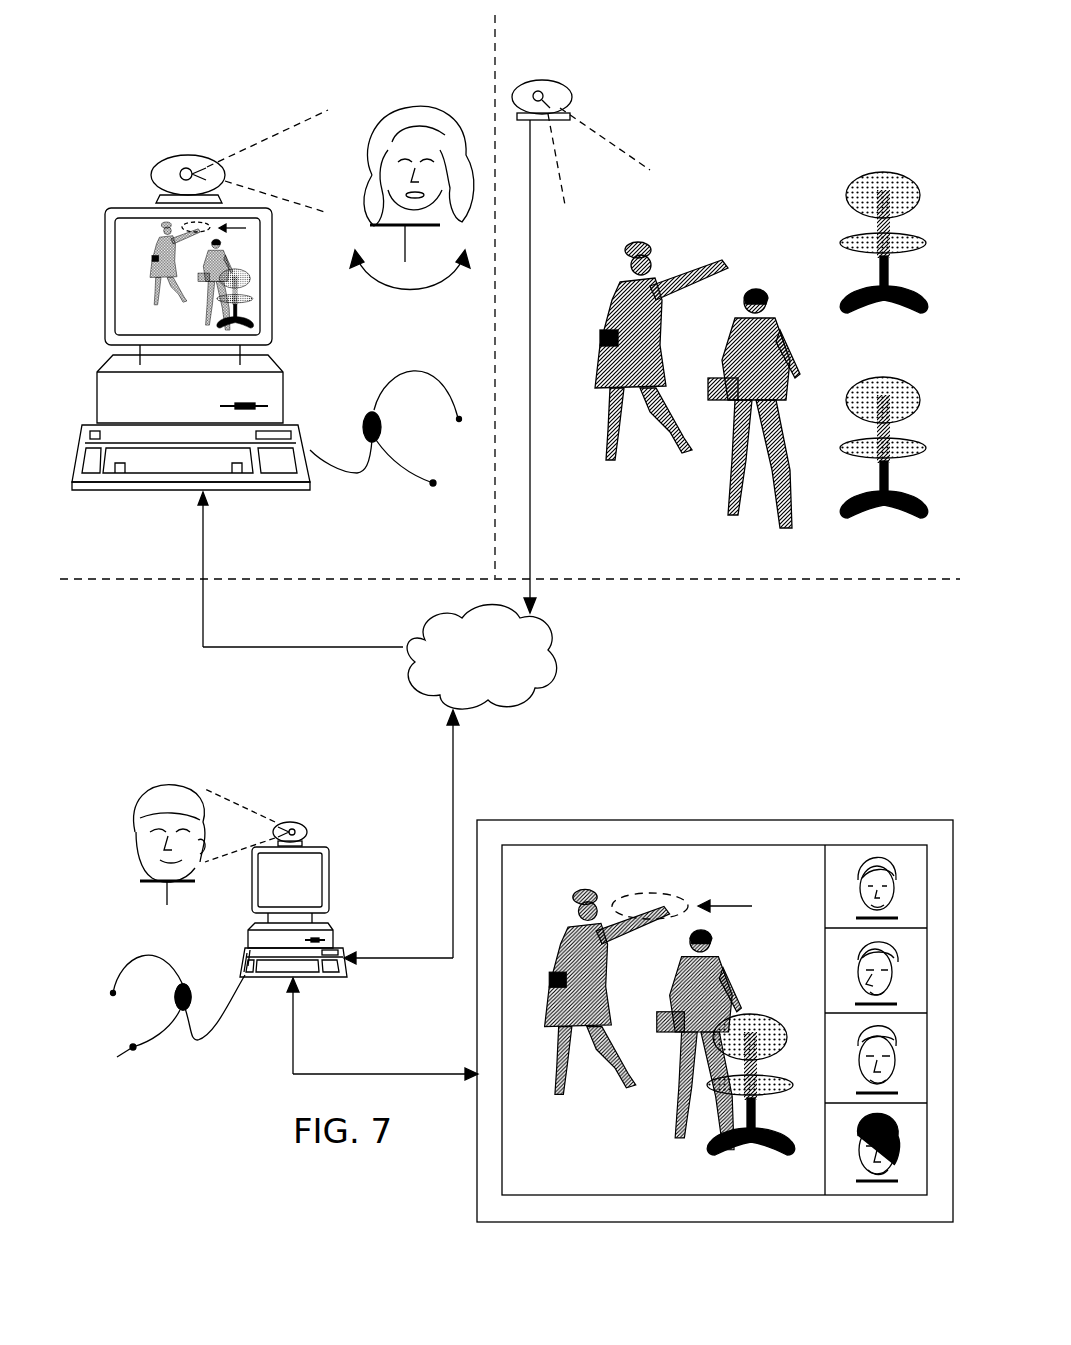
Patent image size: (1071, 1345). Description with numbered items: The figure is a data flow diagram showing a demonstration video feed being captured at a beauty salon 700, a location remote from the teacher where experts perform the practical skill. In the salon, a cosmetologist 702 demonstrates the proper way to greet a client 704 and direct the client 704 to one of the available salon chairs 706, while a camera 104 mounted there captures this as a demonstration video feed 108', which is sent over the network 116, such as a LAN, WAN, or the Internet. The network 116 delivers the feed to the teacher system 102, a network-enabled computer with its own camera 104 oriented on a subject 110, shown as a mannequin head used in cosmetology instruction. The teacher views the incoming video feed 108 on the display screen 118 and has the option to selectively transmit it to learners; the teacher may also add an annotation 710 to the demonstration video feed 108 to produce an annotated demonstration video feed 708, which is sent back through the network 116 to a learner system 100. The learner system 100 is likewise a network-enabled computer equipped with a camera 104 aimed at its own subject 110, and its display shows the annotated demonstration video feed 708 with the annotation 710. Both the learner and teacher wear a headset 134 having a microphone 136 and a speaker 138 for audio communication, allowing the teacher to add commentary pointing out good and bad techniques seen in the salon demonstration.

The learner system 100 is at (126, 92).
The teacher system 102 is at (342, 808).
The camera 104 is at (182, 157).
The video feed 108 is at (716, 1023).
The demonstration video feed 108' is at (553, 366).
The subject 110 is at (432, 115).
The network 116 is at (463, 680).
The display screen 118 is at (690, 820).
The headset 134 is at (428, 364).
The microphone 136 is at (134, 1046).
The speaker 138 is at (174, 1004).
The beauty salon 700 is at (648, 68).
The cosmetologist 702 is at (612, 290).
The client 704 is at (730, 488).
The salon chair 706 is at (862, 176).
The annotated demonstration video feed 708 is at (240, 252).
The annotation 710 is at (672, 878).